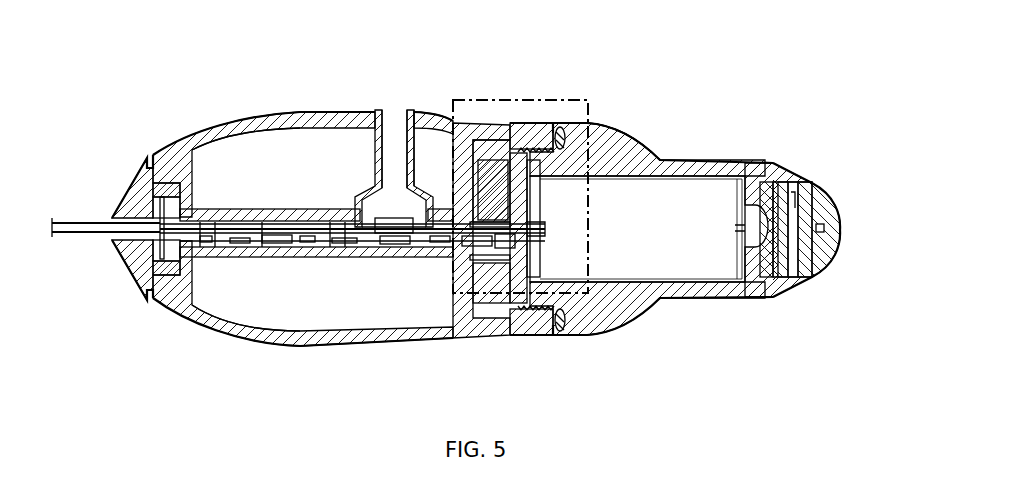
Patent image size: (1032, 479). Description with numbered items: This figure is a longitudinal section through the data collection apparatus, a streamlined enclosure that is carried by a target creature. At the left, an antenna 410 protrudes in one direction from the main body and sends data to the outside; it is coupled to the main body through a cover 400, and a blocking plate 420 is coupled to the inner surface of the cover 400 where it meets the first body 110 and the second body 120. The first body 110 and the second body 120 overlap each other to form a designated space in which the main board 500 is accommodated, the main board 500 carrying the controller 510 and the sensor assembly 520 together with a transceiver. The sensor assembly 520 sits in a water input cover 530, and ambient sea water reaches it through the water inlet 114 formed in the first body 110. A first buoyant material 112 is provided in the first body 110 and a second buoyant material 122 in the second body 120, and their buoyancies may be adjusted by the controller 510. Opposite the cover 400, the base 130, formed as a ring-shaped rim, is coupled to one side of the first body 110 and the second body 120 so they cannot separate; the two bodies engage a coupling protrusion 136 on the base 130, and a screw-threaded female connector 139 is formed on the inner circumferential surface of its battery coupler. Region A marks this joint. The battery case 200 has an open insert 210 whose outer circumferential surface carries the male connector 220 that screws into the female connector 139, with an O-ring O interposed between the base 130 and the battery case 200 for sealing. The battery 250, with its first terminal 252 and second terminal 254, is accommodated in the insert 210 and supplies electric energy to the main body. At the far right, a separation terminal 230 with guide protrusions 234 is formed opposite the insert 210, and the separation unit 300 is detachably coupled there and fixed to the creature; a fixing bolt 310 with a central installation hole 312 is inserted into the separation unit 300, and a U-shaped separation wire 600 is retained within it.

The first body 110 is at (218, 125).
The first buoyant material 112 is at (287, 143).
The water inlet 114 is at (399, 133).
The second body 120 is at (247, 336).
The second buoyant material 122 is at (297, 322).
The base 130 is at (512, 150).
The coupling protrusion 136 is at (480, 150).
The female connector 139 is at (565, 165).
The battery case 200 is at (605, 318).
The insert 210 is at (699, 188).
The male connector 220 is at (545, 322).
The separation terminal 230 is at (753, 165).
The guide protrusions 234 is at (758, 262).
The battery 250 is at (639, 190).
The first terminal 252 is at (542, 226).
The second terminal 254 is at (530, 160).
The separation unit 300 is at (838, 214).
The fixing bolt 310 is at (823, 204).
The installation hole 312 is at (795, 200).
The cover 400 is at (137, 182).
The antenna 410 is at (72, 222).
The blocking plate 420 is at (150, 288).
The main board 500 is at (225, 247).
The controller 510 is at (313, 225).
The sensor assembly 520 is at (393, 226).
The water input cover 530 is at (416, 125).
The separation wire 600 is at (832, 246).
The region A is at (563, 112).
The O-ring O is at (566, 128).